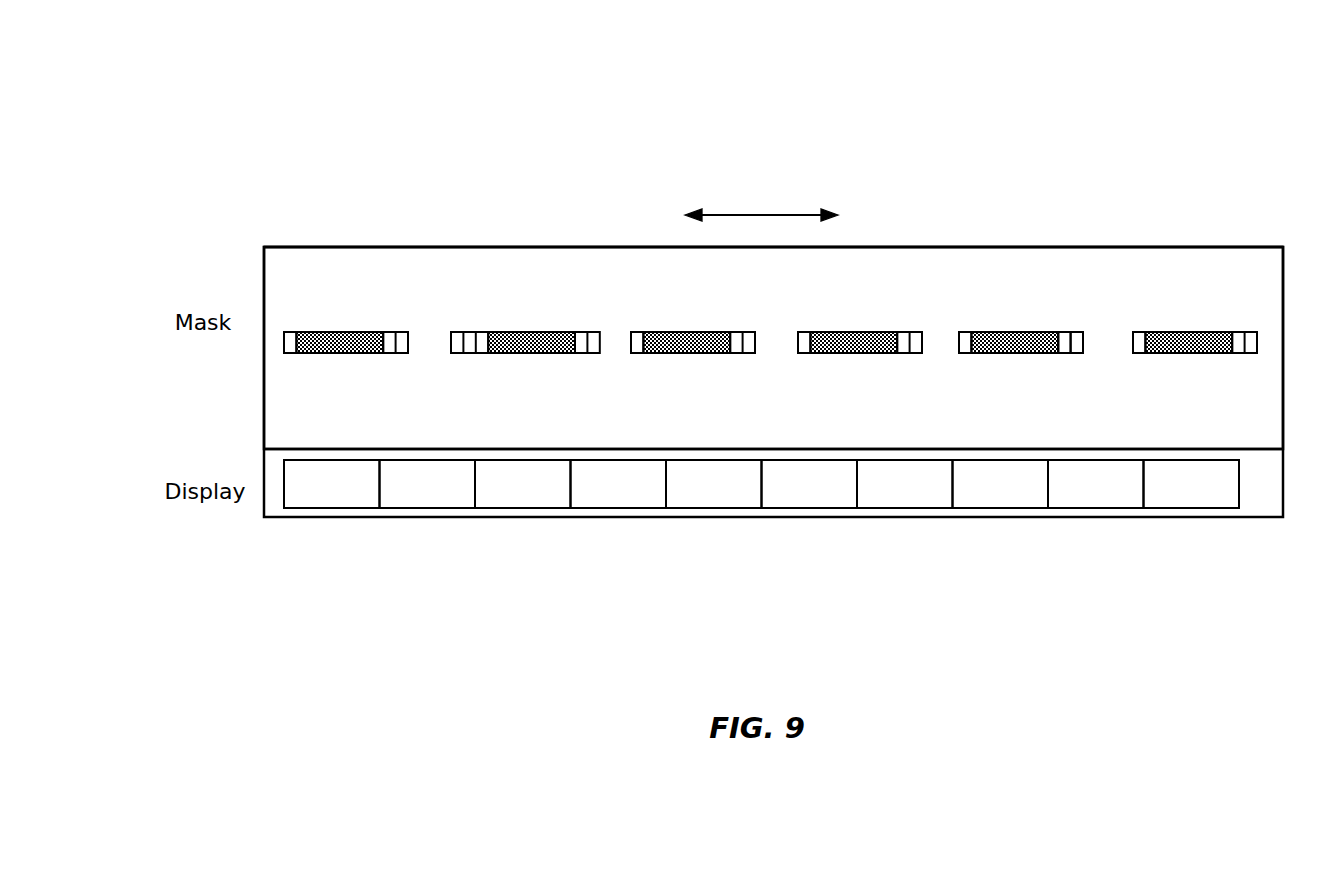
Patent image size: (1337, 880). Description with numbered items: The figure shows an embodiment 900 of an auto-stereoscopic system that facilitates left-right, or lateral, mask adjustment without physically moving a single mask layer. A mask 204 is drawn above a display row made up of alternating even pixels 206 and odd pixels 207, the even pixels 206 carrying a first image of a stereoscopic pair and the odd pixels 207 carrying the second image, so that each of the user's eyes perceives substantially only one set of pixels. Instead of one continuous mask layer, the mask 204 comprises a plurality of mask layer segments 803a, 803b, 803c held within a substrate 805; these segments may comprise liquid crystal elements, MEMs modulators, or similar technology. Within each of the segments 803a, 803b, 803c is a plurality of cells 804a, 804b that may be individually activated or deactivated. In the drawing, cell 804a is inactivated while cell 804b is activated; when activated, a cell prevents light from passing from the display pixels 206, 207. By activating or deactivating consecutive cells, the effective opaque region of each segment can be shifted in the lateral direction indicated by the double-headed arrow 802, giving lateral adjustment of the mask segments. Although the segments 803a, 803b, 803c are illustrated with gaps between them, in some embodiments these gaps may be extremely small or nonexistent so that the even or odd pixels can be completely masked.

The lateral mask adjustment embodiment 900 is at (347, 96).
The mask 204 is at (280, 246).
The substrate 805 is at (396, 257).
The lateral adjustment direction 802 is at (752, 215).
The mask layer segment 803a is at (1193, 322).
The mask layer segment 803b is at (1003, 332).
The mask layer segment 803c is at (829, 332).
The cell 804a is at (963, 332).
The cell 804b is at (977, 332).
The even pixels 206 is at (341, 508).
The odd pixels 207 is at (428, 508).